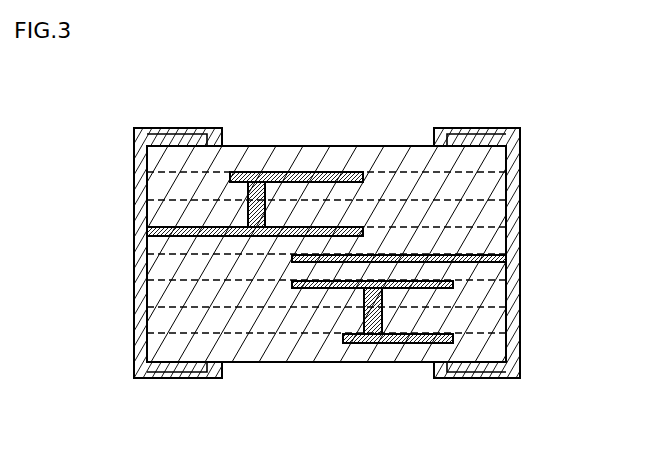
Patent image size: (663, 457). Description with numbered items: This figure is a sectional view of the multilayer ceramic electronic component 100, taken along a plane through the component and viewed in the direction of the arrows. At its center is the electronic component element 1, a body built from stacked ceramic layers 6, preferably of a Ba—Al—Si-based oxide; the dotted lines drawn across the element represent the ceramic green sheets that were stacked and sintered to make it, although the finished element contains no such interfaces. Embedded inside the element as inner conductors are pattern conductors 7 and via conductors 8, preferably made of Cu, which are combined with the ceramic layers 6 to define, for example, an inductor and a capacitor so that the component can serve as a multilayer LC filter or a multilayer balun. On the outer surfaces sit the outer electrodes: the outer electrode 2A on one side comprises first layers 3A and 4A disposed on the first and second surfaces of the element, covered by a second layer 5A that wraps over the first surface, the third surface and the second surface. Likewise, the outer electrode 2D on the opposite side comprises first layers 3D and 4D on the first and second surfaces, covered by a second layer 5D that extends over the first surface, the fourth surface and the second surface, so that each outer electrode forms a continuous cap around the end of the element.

The multilayer ceramic electronic component 100 is at (638, 81).
The electronic component element 1 is at (310, 145).
The ceramic layers 6 is at (378, 203).
The outer electrode 2A is at (62, 212).
The first layer 3A is at (232, 173).
The first layer 4A is at (270, 237).
The second layer 5A is at (135, 255).
The outer electrode 2D is at (592, 212).
The first layer 3D is at (445, 255).
The first layer 4D is at (458, 290).
The second layer 5D is at (520, 255).
The pattern conductors 7 is at (397, 345).
The via conductors 8 is at (363, 310).